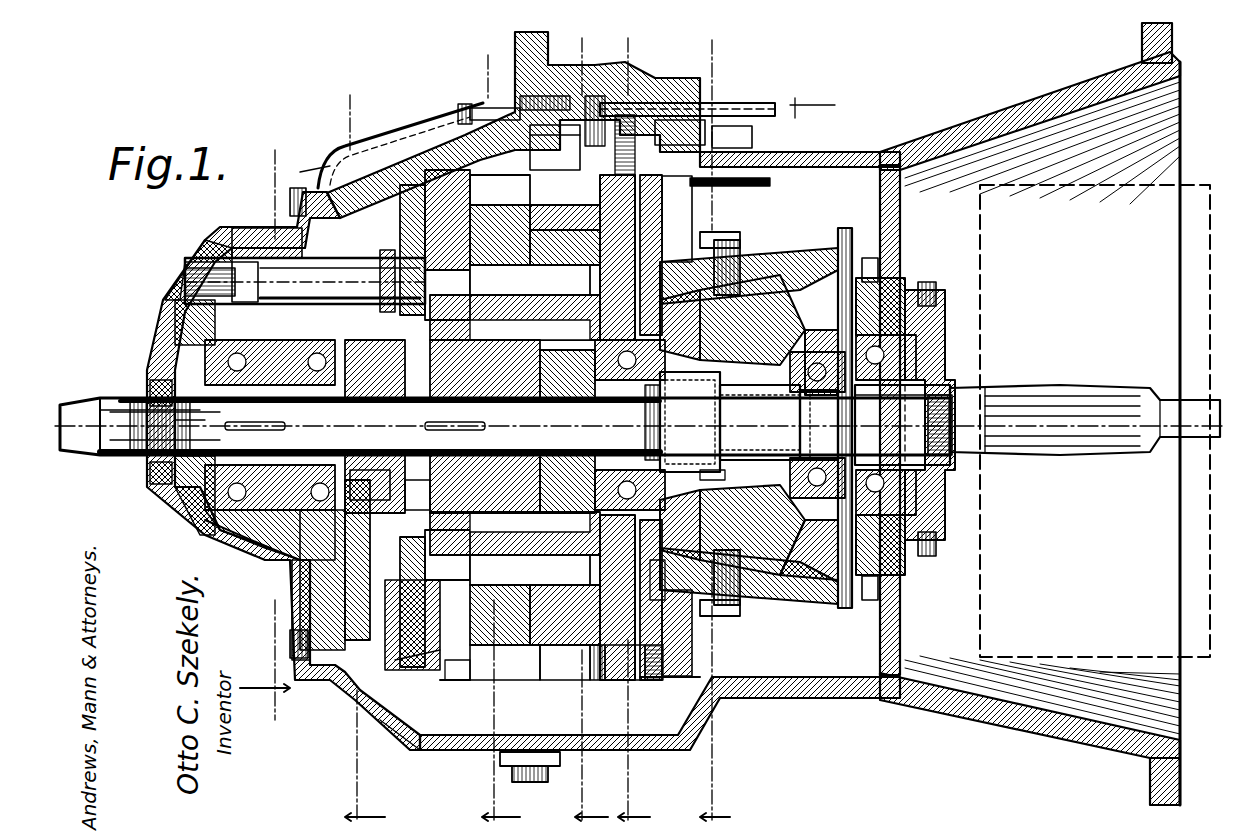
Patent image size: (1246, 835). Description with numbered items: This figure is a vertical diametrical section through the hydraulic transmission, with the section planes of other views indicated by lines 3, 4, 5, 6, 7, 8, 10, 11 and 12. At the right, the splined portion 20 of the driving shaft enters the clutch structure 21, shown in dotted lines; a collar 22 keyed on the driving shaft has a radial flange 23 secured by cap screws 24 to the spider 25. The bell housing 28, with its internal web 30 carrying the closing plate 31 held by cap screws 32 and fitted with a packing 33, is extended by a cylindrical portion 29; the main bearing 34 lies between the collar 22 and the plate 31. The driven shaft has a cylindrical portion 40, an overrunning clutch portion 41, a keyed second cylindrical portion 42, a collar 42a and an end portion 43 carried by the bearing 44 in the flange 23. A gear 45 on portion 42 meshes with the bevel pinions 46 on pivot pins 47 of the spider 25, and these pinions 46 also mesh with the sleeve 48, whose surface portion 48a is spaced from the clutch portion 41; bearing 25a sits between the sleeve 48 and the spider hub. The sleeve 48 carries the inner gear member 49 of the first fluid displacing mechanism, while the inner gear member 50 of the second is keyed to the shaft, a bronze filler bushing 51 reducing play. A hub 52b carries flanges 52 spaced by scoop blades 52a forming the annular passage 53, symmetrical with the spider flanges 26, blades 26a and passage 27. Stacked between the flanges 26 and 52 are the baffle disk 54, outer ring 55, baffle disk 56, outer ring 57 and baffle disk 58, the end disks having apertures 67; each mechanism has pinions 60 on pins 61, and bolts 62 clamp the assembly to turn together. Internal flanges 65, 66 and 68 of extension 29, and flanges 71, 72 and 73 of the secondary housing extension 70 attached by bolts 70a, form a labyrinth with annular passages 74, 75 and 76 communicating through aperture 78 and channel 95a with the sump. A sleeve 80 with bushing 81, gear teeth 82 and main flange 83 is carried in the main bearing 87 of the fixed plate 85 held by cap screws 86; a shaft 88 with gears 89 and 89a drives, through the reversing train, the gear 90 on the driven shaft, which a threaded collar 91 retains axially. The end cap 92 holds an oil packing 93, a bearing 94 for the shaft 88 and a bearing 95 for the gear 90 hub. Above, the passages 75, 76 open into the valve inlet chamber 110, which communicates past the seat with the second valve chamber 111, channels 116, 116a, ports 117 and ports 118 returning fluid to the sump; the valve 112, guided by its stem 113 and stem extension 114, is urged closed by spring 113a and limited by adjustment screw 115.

The section line 3- 3 is at (715, 428).
The section line 4- 4 is at (634, 426).
The section line 5- 5 is at (591, 425).
The section line 6- 6 is at (500, 427).
The section line 7- 7 is at (364, 454).
The section line 8- 8 is at (265, 442).
The bevel gear 10 is at (752, 425).
The section line 11- 11 is at (958, 423).
The section line 12- 12 is at (565, 140).
The splined portion 20 is at (1078, 420).
The clutch structure 21 is at (1135, 180).
The collar 22 is at (902, 425).
The flange 23 is at (846, 232).
The cap screws 24 is at (880, 270).
The spider 25 is at (790, 262).
The anti-friction bearing 25a is at (625, 470).
The flanges 26 is at (660, 226).
The scoop blades 26a is at (650, 596).
The annular passage 27 is at (662, 241).
The bell housing 28 is at (1005, 117).
The cylindrical portion 29 is at (820, 155).
The internal web 30 is at (900, 200).
The closing plate 31 is at (905, 300).
The cap screws 32 is at (935, 296).
The packing 33 is at (955, 372).
The main bearing 34 is at (930, 335).
The cylindrical portion 40 is at (640, 426).
The overrunning clutch portion 41 is at (690, 422).
The second cylindrical portion 42 is at (760, 422).
The collar 42a is at (770, 408).
The end portion 43 is at (819, 425).
The anti-friction bearing 44 is at (790, 545).
The gear 45 is at (821, 351).
The bevel pinions 46 is at (758, 290).
The pivot pins 47 is at (722, 260).
The sleeve 48 is at (660, 395).
The cylindrical internal surface portion 48a is at (715, 470).
The inner gear member 49 is at (565, 380).
The inner gear member 50 is at (480, 385).
The filler bushing 51 is at (555, 400).
The flanges 52 is at (425, 185).
The scoop blades 52a is at (405, 660).
The hub 52b is at (438, 495).
The annular passage 53 is at (446, 433).
The baffle disk 54 is at (617, 427).
The outer ring 55 is at (565, 225).
The baffle disk 56 is at (565, 200).
The outer ring 57 is at (477, 220).
The baffle disk 58 is at (530, 280).
The pinions 60 is at (541, 403).
The pins 61 is at (565, 455).
The bolts 62 is at (572, 700).
The internal flange 65 is at (660, 200).
The internal flange 66 is at (640, 700).
The apertures 67 is at (515, 425).
The internal flange 68 is at (555, 710).
The secondary housing extension 70 is at (342, 185).
The bolts 70a is at (520, 775).
The flange 71 is at (512, 708).
The second flange 72 is at (455, 680).
The flange 73 is at (400, 640).
The annular passage 74 is at (635, 690).
The annular passage 75 is at (582, 690).
The annular passage 76 is at (488, 690).
The aperture 78 is at (662, 672).
The sleeve 80 is at (385, 450).
The bronze bushing 81 is at (387, 411).
The gear teeth 82 is at (372, 489).
The main flange 83 is at (405, 520).
The fixed plate 85 is at (322, 660).
The cap screws 86 is at (290, 650).
The main bearing 87 is at (270, 425).
The shaft 88 is at (305, 281).
The gear 89 is at (375, 281).
The gear 89a is at (252, 228).
The gear 90 is at (179, 414).
The threaded collar 91 is at (200, 498).
The end cap 92 is at (150, 488).
The oil packing 93 is at (150, 470).
The bearing 94 is at (185, 278).
The anti-friction bearing 95 is at (205, 520).
The channel 95a is at (400, 742).
The valve inlet chamber 110 is at (552, 85).
The second valve chamber 111 is at (625, 130).
The valve 112 is at (598, 96).
The stem 113 is at (740, 104).
The valve spring 113a is at (561, 100).
The stem extension 114 is at (500, 110).
The adjustment screw 115 is at (462, 112).
The channel 116 is at (748, 140).
The channel 116a is at (372, 120).
The port 117 is at (440, 175).
The ports 118 is at (735, 210).